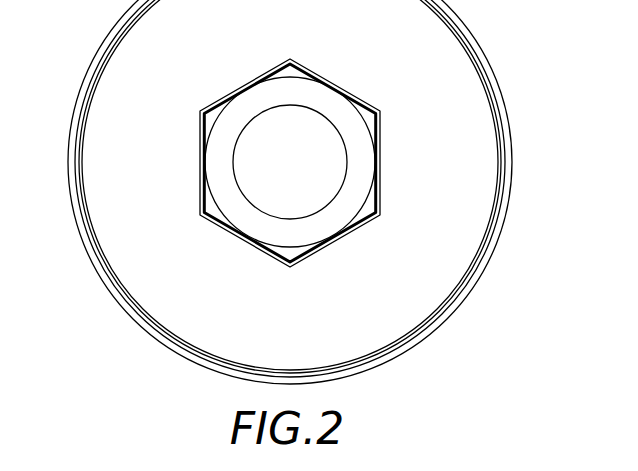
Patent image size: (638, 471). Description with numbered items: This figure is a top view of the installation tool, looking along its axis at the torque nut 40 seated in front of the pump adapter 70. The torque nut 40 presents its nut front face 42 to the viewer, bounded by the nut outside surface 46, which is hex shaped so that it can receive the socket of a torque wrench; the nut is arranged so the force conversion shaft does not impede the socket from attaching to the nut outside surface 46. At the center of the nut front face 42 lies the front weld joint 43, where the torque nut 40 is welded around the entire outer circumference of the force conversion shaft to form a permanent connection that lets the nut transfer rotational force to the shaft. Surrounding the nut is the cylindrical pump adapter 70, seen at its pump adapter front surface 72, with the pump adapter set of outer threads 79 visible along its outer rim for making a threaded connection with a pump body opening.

The torque nut 40 is at (290, 139).
The nut front face 42 is at (288, 92).
The front weld joint 43 is at (328, 162).
The nut outside surface 46 is at (200, 152).
The pump adapter 70 is at (295, 192).
The pump adapter front surface 72 is at (108, 147).
The pump adapter set of outer threads 79 is at (505, 102).